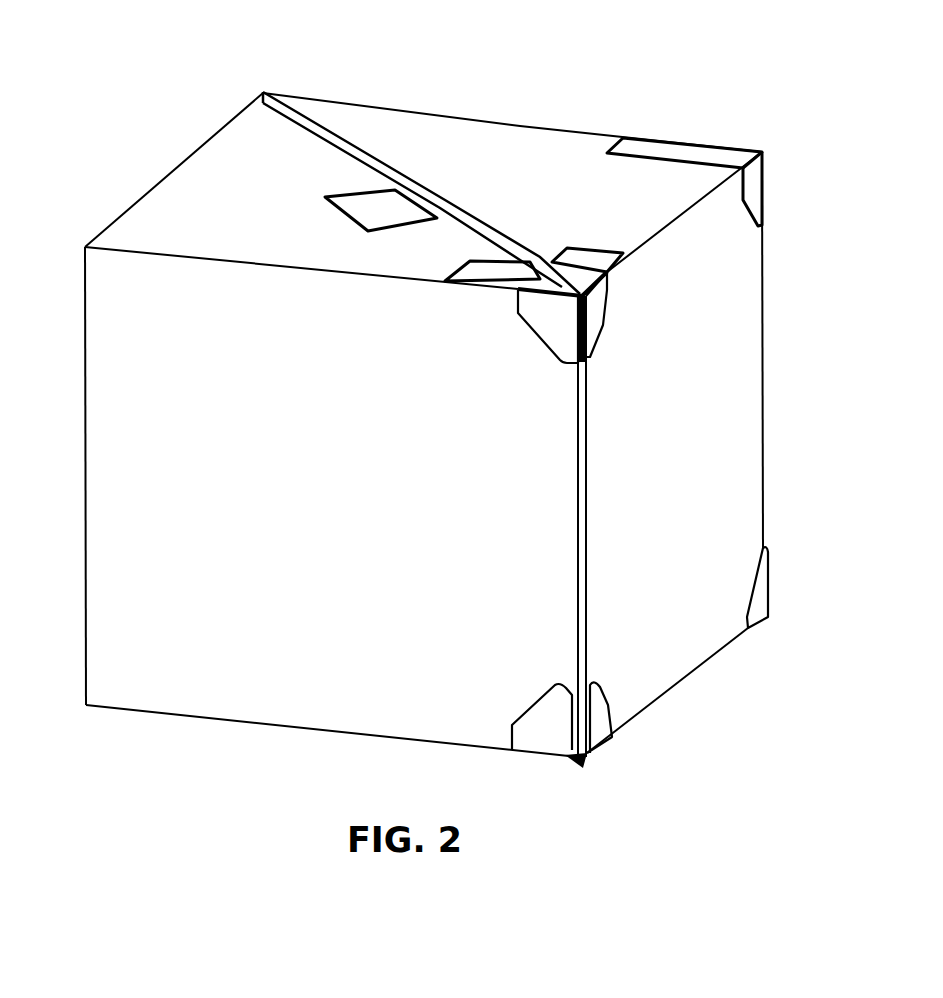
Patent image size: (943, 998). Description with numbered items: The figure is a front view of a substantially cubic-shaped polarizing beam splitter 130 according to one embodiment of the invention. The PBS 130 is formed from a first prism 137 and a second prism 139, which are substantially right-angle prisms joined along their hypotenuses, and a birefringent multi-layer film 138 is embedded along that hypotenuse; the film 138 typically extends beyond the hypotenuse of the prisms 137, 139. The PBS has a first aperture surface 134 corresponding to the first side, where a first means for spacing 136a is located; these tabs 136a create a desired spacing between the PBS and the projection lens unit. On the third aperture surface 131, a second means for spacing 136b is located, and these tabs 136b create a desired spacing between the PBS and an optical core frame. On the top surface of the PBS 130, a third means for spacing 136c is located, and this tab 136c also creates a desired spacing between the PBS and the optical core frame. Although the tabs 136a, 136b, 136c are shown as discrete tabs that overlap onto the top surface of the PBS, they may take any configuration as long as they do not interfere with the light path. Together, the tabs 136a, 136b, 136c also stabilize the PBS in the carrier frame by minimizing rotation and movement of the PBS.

The polarizing beam splitter 130 is at (553, 72).
The third aperture surface 131 is at (153, 462).
The first aperture surface 134 is at (710, 437).
The first means for spacing 136a is at (755, 185).
The second means for spacing 136b is at (550, 313).
The third means for spacing 136c is at (362, 207).
The first prism 137 is at (190, 220).
The birefringent multi-layer film 138 is at (263, 93).
The second prism 139 is at (540, 163).